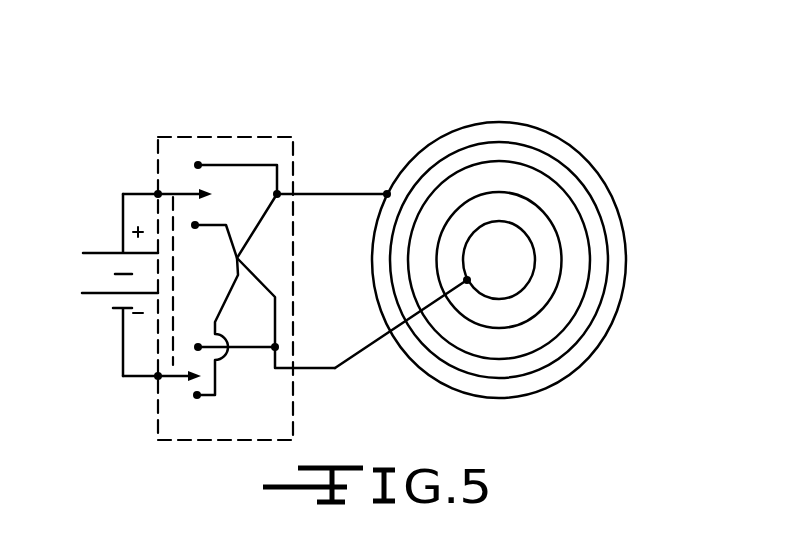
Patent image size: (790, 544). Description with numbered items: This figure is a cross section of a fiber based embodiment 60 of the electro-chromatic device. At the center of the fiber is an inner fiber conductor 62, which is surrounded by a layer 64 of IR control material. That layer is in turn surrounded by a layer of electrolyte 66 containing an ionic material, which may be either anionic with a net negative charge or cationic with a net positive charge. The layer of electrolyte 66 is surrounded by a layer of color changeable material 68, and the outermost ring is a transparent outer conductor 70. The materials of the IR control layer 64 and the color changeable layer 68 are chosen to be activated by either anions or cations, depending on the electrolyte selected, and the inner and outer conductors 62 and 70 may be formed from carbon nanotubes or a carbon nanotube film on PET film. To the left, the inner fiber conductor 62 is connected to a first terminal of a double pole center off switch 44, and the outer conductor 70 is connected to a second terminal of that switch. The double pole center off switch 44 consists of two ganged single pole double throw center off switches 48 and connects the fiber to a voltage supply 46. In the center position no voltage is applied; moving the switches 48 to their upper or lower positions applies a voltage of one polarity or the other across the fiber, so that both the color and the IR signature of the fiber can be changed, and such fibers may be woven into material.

The double pole center off switch 44 is at (212, 136).
The voltage supply 46 is at (105, 303).
The single pole double throw center off switch 48 is at (206, 206).
The fiber based embodiment 60 is at (527, 250).
The inner fiber conductor 62 is at (510, 279).
The layer of IR control material 64 is at (545, 245).
The layer of electrolyte 66 is at (573, 257).
The layer of color changeable material 68 is at (598, 283).
The transparent outer conductor 70 is at (607, 318).